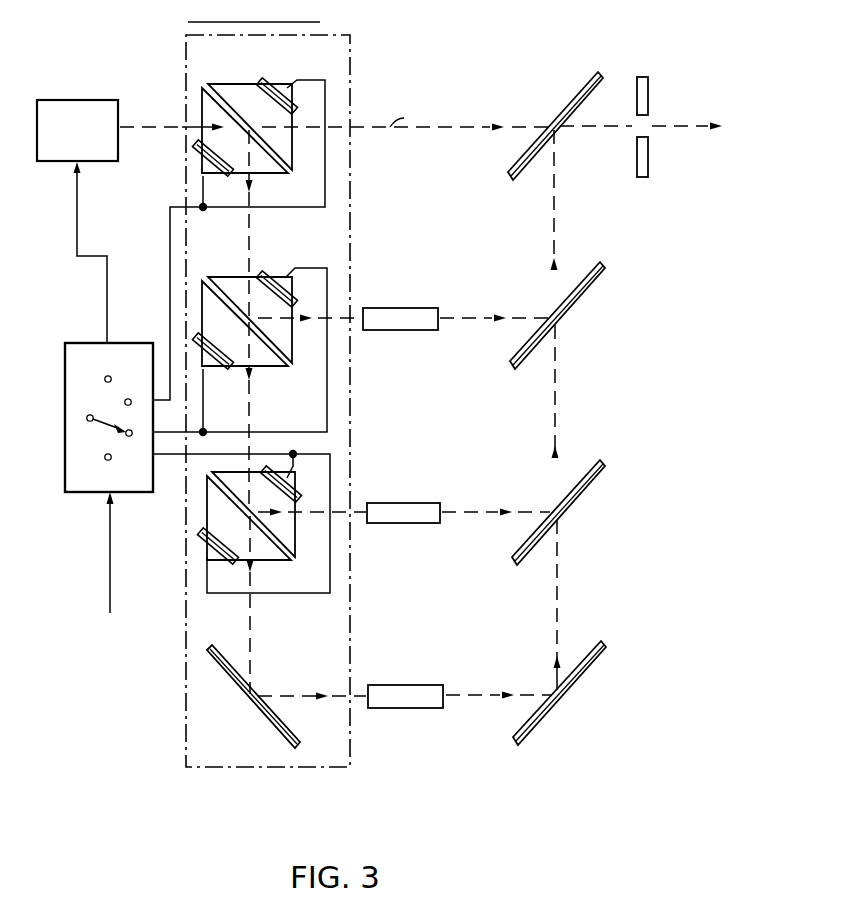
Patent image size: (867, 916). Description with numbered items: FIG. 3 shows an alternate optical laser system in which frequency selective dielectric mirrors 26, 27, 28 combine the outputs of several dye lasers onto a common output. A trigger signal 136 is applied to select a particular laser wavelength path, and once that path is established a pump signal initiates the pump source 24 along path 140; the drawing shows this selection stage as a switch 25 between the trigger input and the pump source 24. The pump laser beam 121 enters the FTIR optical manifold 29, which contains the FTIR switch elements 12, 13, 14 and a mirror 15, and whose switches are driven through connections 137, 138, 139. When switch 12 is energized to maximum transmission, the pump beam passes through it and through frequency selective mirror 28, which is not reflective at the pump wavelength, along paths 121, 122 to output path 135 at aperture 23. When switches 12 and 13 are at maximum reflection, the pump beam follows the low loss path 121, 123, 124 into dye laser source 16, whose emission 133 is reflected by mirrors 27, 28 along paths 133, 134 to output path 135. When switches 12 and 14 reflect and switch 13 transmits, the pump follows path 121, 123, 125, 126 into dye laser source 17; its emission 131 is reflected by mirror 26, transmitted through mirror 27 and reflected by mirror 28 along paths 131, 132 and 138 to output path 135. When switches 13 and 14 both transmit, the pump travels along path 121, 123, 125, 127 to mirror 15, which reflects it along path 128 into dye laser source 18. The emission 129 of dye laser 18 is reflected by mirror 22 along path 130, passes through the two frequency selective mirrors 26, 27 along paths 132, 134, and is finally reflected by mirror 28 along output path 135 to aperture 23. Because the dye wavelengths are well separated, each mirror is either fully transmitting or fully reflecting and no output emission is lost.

The FTIR switch 12 is at (232, 82).
The FTIR switch 13 is at (230, 274).
The FTIR switch 14 is at (207, 478).
The mirror 15 is at (276, 716).
The dye laser source 16 is at (408, 331).
The dye laser source 17 is at (418, 524).
The dye laser source 18 is at (418, 709).
The mirror 22 is at (588, 668).
The aperture 23 is at (642, 178).
The pump source 24 is at (97, 100).
The switch 25 is at (85, 340).
The frequency selective mirror 26 is at (592, 478).
The frequency selective mirror 27 is at (574, 300).
The frequency selective mirror 28 is at (573, 100).
The FTIR optical manifold 29 is at (322, 22).
The pump laser beam 121 is at (172, 145).
The path 122 is at (452, 128).
The path 123 is at (251, 243).
The path 124 is at (310, 336).
The path 125 is at (249, 402).
The path 126 is at (320, 514).
The path 127 is at (251, 622).
The path 128 is at (310, 694).
The emission 129 is at (498, 692).
The path 130 is at (557, 638).
The laser source output beam 131 is at (500, 508).
The path 132 is at (555, 420).
The laser emission 133 is at (496, 315).
The path 134 is at (554, 245).
The output path 135 is at (672, 130).
The trigger signal 136 is at (108, 552).
The Pockels cell drive connection 137 is at (297, 208).
The path 138 is at (327, 403).
The Pockels cell drive connection 139 is at (300, 593).
The path 140 is at (77, 230).